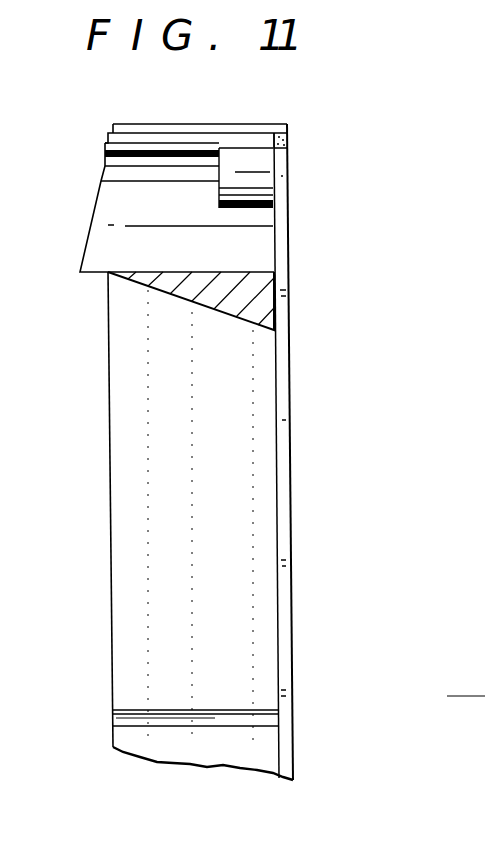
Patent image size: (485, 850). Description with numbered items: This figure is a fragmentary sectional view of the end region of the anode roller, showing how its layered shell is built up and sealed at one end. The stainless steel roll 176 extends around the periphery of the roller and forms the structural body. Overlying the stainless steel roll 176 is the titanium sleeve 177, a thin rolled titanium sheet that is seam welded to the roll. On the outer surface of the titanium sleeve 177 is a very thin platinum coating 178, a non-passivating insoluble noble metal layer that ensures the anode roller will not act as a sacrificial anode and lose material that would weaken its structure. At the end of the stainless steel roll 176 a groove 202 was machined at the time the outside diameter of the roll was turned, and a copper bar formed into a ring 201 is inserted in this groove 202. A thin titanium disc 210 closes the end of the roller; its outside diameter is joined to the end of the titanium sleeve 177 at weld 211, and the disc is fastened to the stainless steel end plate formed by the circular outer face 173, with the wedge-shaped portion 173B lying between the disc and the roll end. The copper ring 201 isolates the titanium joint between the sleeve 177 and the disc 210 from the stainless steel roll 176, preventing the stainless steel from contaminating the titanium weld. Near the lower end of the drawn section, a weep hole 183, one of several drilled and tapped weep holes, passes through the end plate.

The platinum coating 178 is at (178, 124).
The titanium sleeve 177 is at (106, 153).
The weld 211 is at (284, 141).
The copper ring 201 is at (265, 181).
The groove 202 is at (272, 208).
The stainless steel roll 176 is at (215, 262).
The titanium disc 210 is at (289, 268).
The wedge portion of housing 173B is at (288, 328).
The circular outer face 173 is at (245, 538).
The weep hole 183 is at (198, 708).